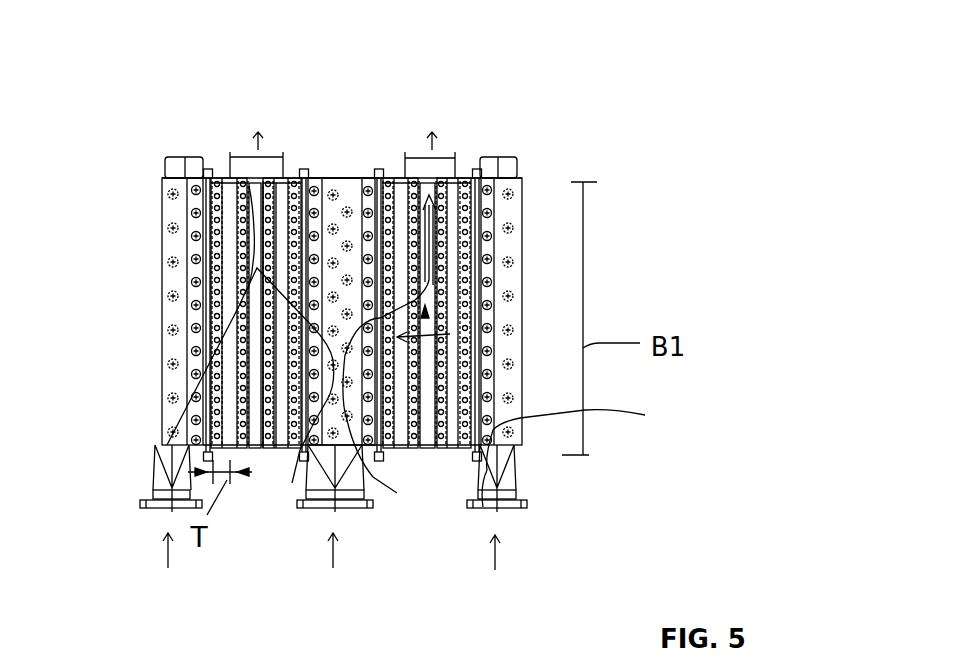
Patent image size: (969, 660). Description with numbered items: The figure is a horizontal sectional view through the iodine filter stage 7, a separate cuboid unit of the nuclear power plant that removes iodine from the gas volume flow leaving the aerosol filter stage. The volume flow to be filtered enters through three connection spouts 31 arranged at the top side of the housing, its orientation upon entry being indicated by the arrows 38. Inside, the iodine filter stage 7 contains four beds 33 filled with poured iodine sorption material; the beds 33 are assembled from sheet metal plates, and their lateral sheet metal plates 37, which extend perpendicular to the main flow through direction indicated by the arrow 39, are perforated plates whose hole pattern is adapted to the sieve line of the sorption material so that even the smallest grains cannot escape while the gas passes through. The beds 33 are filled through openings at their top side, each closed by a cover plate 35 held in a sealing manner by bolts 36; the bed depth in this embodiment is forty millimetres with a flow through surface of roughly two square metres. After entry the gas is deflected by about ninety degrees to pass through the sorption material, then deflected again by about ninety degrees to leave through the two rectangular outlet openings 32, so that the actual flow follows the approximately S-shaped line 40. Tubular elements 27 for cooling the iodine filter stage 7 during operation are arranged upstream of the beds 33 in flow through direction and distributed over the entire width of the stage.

The iodine filter stage 7 is at (618, 193).
The tubular elements 27 is at (195, 168).
The connection spouts 31 is at (150, 503).
The outlet openings 32 is at (258, 165).
The beds 33 is at (230, 165).
The cover plate 35 is at (252, 450).
The bolts 36 is at (277, 450).
The lateral sheet metal plates 37 is at (446, 285).
The arrows 38 is at (168, 556).
The arrow 39 is at (450, 334).
The line 40 is at (218, 335).